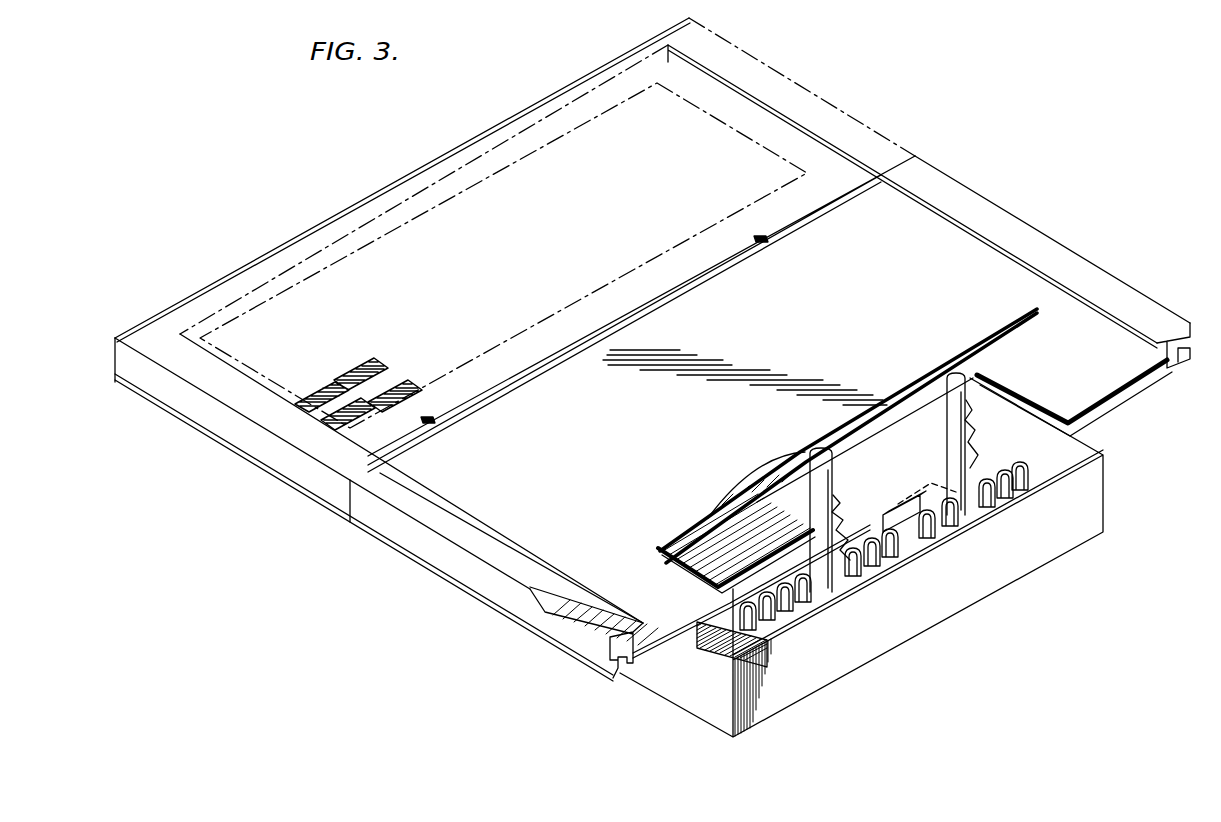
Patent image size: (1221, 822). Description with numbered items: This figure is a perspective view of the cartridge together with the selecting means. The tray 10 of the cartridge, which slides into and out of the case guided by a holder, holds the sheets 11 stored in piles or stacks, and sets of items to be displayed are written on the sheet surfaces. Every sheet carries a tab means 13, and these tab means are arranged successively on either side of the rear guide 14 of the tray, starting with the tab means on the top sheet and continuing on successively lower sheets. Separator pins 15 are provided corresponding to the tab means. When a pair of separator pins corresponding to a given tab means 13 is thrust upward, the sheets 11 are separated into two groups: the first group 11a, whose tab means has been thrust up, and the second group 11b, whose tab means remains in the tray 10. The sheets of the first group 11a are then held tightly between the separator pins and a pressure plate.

The tray 10 is at (1110, 405).
The sheets 11 is at (838, 340).
The first group of sheets 11a is at (684, 537).
The second group of sheets 11b is at (687, 563).
The tab means 13 is at (765, 468).
The rear guide 14 is at (900, 517).
The separator pins 15 is at (818, 572).